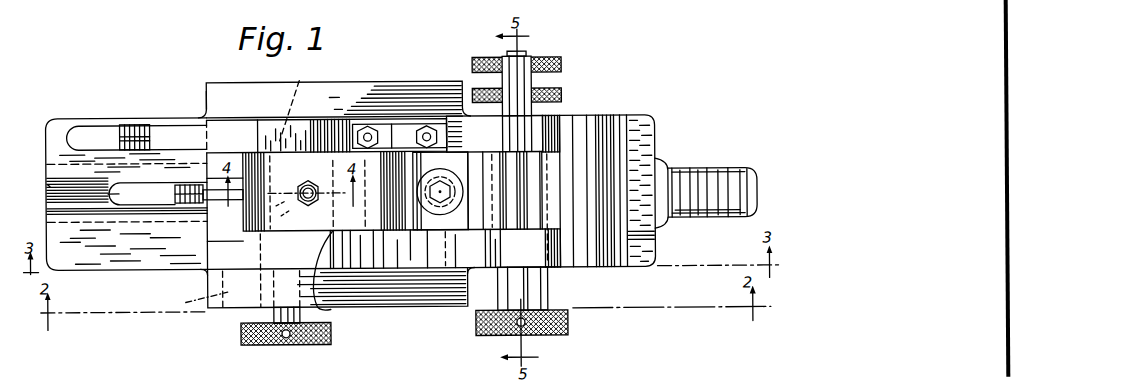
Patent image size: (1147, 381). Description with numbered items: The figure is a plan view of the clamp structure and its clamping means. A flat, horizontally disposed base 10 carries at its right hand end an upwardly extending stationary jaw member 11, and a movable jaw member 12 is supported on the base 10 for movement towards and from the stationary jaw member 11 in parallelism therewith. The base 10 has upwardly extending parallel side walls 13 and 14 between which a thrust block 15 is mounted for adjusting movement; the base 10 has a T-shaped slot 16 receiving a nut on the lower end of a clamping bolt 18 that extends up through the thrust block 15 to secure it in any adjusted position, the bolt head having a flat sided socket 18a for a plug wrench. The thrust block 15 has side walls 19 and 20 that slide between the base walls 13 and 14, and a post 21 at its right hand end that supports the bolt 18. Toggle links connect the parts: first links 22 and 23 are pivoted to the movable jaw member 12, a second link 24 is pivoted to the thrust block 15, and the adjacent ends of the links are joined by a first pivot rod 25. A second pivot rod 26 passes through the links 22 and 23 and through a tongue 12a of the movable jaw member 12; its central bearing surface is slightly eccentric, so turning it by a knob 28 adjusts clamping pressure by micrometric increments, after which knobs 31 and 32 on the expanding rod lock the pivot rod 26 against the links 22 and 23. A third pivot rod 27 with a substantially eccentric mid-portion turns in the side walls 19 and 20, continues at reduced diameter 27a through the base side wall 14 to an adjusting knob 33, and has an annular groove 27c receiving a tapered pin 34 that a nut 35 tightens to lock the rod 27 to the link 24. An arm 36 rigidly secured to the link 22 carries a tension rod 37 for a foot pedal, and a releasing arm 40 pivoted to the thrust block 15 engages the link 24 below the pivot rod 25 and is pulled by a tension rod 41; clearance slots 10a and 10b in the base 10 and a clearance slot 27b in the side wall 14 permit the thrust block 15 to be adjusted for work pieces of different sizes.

The base 10 is at (592, 117).
The clearance slot 10a is at (92, 137).
The clearance slot 10b is at (140, 206).
The stationary jaw member 11 is at (650, 147).
The movable jaw member 12 is at (568, 258).
The tongue 12a is at (518, 218).
The side wall 13 is at (348, 83).
The side wall 14 is at (378, 297).
The thrust block 15 is at (214, 233).
The T-shaped slot 16 is at (48, 182).
The clamping bolt 18 is at (457, 173).
The flat sided socket 18a is at (438, 196).
The side wall 19 is at (218, 117).
The side wall 20 is at (207, 268).
The post 21 is at (452, 227).
The first link 22 is at (560, 116).
The first link 23 is at (549, 261).
The second link 24 is at (327, 279).
The first pivot rod 25 is at (392, 308).
The second pivot rod 26 is at (497, 292).
The third pivot rod 27 is at (294, 102).
The reduced diameter end portion 27a is at (240, 318).
The clearance slot 27b is at (188, 303).
The annular groove 27c is at (339, 191).
The knob 28 is at (567, 326).
The inner knob 31 is at (562, 100).
The outer knob 32 is at (562, 60).
The adjusting knob 33 is at (248, 347).
The tapered pin 34 is at (302, 182).
The nut 35 is at (307, 185).
The arm 36 is at (170, 130).
The tension rod 37 is at (134, 140).
The releasing arm 40 is at (222, 198).
The tension rod 41 is at (178, 193).